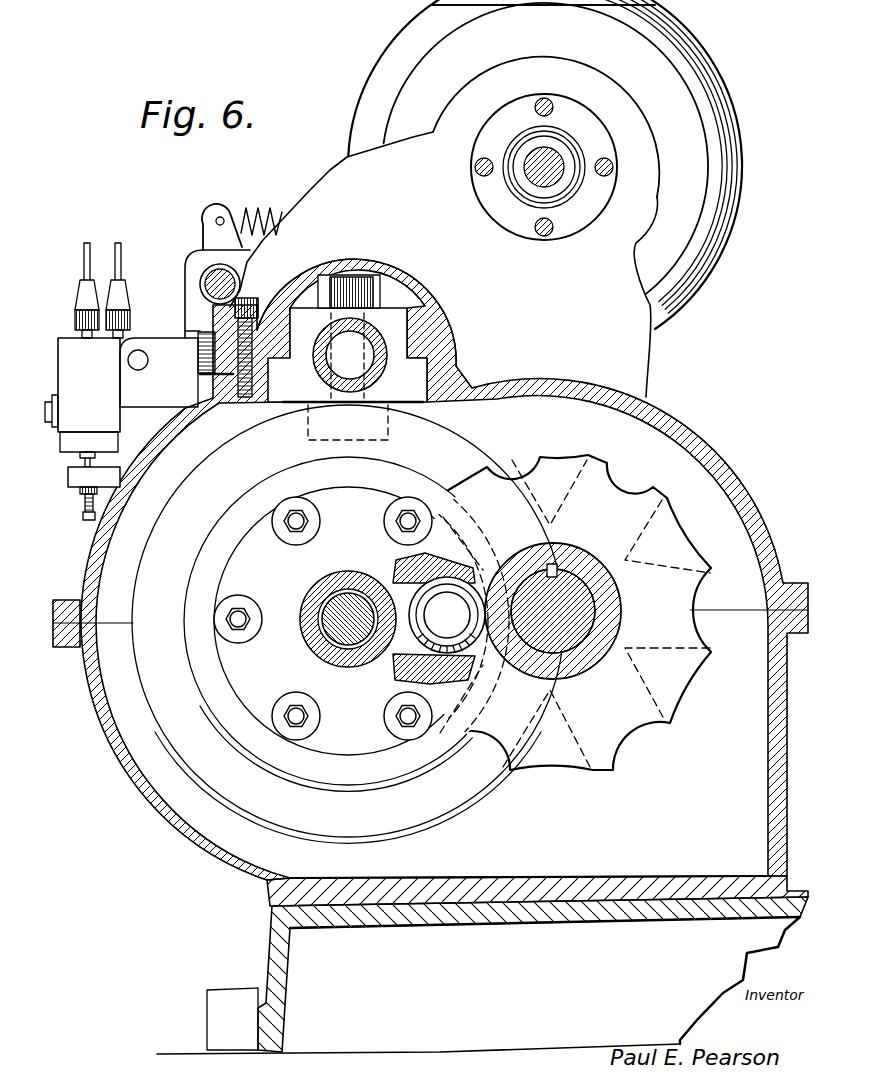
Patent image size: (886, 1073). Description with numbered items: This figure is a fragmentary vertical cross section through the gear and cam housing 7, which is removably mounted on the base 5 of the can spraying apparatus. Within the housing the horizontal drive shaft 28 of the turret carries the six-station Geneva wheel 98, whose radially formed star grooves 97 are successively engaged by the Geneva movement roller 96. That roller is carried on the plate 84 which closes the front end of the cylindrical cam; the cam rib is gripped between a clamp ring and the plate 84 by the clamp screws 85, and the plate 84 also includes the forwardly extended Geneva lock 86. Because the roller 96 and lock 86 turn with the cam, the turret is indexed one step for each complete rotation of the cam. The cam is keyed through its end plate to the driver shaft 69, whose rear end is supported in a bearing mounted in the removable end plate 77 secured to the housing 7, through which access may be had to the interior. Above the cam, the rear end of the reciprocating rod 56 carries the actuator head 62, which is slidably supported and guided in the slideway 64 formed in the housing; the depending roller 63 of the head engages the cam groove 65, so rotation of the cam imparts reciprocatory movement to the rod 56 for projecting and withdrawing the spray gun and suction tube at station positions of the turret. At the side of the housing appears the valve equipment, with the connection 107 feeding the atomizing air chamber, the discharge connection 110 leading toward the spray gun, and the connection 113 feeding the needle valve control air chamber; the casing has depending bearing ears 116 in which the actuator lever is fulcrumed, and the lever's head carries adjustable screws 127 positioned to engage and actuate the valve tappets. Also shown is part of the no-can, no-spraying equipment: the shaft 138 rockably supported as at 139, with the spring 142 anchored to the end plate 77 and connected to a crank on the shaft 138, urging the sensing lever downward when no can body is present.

The base 5 is at (268, 963).
The gear and cam housing 7 is at (207, 822).
The drive shaft 28 is at (606, 602).
The reciprocating rod 56 is at (400, 335).
The actuator head 62 is at (393, 313).
The roller 63 is at (388, 424).
The slideway 64 is at (432, 374).
The cam groove 65 is at (410, 808).
The driver shaft 69 is at (318, 640).
The removable end plate 77 is at (486, 198).
The plate 84 is at (292, 668).
The clamp screws 85 is at (312, 514).
The Geneva lock 86 is at (318, 582).
The Geneva movement roller 96 is at (405, 570).
The star grooves 97 is at (400, 655).
The six-station Geneva wheel 98 is at (660, 674).
The connection 107 is at (88, 302).
The discharge connection 110 is at (57, 417).
The connection 113 is at (122, 302).
The bearing ears 116 is at (80, 483).
The adjustable screws 127 is at (88, 517).
The shaft 138 is at (213, 268).
The rockable support 139 is at (250, 262).
The spring 142 is at (277, 187).